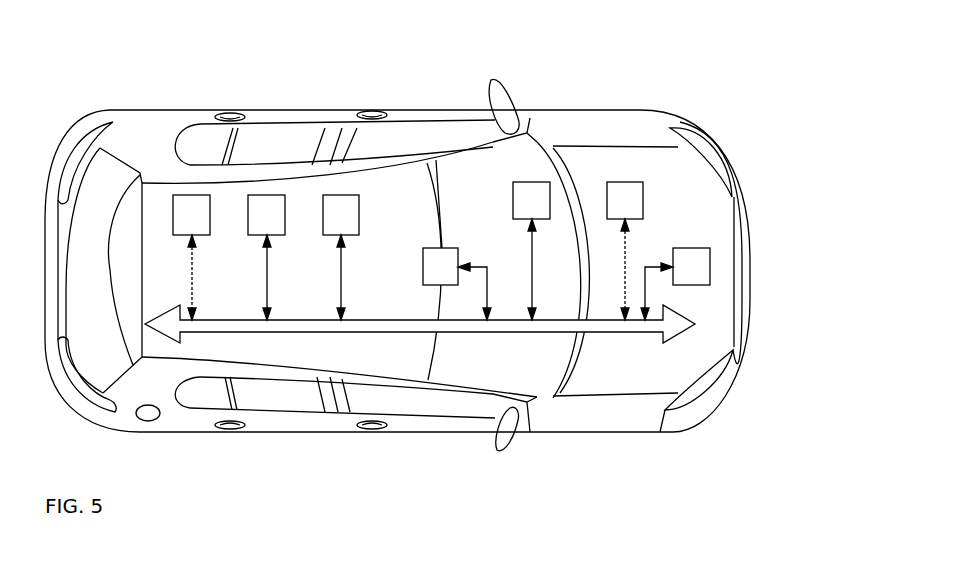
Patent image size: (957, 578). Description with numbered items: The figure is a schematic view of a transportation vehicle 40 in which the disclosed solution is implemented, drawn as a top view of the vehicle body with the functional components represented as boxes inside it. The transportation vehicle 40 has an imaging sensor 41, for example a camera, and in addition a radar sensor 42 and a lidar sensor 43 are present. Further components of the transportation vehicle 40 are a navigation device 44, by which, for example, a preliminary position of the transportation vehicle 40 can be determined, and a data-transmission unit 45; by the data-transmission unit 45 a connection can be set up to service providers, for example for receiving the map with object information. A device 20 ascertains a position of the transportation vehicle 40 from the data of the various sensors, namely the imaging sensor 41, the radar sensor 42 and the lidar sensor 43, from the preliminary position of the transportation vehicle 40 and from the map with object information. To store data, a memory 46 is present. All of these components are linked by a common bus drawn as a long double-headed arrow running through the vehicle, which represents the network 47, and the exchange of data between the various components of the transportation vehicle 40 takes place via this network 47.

The transportation vehicle 40 is at (397, 264).
The imaging sensor 41 is at (437, 247).
The radar sensor 42 is at (692, 247).
The lidar sensor 43 is at (641, 200).
The navigation device 44 is at (330, 196).
The data-transmission unit 45 is at (265, 196).
The memory 46 is at (190, 196).
The device 20 is at (533, 182).
The network 47 is at (283, 332).